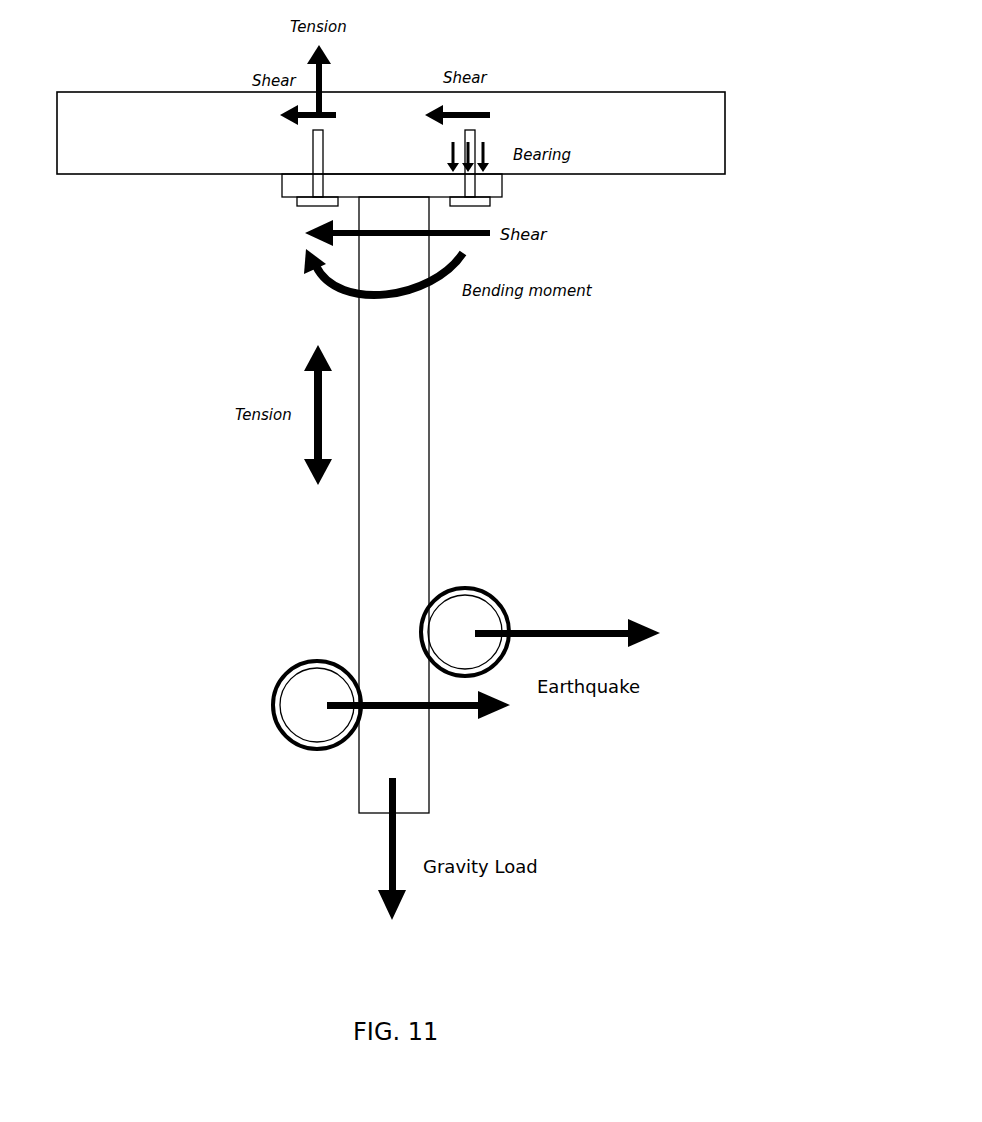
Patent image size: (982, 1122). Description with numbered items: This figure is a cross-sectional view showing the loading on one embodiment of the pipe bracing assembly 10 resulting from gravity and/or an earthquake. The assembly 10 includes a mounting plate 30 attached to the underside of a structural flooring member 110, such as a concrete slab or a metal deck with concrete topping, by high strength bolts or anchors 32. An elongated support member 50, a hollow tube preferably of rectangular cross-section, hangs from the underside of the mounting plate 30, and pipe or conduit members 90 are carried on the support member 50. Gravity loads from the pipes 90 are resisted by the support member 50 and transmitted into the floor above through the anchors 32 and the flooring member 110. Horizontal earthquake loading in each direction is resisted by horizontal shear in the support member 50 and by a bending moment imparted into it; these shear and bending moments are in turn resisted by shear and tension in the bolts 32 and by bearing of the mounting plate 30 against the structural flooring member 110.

The pipe bracing assembly 10 is at (284, 523).
The mounting plate 30 is at (502, 187).
The bolt 32 is at (320, 187).
The elongated support member 50 is at (429, 372).
The pipe or conduit member 90 is at (483, 593).
The structural flooring member 110 is at (710, 131).